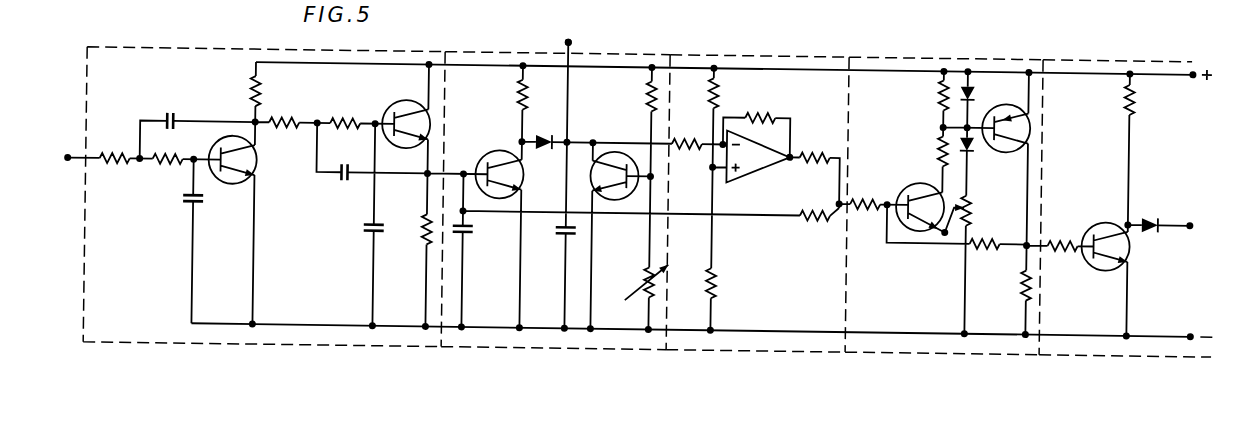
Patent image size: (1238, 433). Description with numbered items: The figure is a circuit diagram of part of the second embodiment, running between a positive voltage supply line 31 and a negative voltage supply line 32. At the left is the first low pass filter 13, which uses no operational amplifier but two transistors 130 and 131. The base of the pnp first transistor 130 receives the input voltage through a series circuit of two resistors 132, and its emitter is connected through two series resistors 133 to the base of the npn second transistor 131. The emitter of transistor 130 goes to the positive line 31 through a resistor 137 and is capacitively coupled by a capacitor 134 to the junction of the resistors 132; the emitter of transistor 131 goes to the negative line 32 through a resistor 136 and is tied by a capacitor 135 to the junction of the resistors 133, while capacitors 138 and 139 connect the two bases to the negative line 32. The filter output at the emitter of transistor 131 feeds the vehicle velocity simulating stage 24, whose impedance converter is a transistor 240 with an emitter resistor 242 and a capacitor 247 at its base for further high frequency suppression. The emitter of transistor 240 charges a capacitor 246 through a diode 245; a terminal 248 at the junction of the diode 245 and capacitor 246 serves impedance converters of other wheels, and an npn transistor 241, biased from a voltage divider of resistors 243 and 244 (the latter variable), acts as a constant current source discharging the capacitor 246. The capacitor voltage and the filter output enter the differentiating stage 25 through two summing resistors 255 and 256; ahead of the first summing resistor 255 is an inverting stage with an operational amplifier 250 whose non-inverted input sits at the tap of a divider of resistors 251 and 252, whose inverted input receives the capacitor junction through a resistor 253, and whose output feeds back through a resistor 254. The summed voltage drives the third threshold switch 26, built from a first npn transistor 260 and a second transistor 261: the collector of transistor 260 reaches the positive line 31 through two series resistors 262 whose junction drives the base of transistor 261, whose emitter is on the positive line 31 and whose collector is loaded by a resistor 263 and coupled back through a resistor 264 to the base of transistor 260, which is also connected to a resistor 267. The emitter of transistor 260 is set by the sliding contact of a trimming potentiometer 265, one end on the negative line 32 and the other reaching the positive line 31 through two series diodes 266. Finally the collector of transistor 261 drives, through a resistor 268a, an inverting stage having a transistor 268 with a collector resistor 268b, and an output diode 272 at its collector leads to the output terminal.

The first low pass filter 13 is at (302, 342).
The vehicle velocity simulating stage 24 is at (550, 342).
The differentiating stage 25 is at (786, 342).
The third threshold switch 26 is at (966, 340).
The positive voltage supply line 31 is at (1162, 60).
The negative voltage supply line 32 is at (1172, 340).
The first transistor 130 is at (258, 170).
The second transistor 131 is at (430, 100).
The resistors 132 is at (168, 172).
The resistors 133 is at (364, 114).
The capacitor 134 is at (168, 108).
The capacitor 135 is at (340, 180).
The resistor 136 is at (424, 232).
The resistor 137 is at (250, 90).
The capacitor 138 is at (200, 207).
The capacitor 139 is at (368, 232).
The transistor 240 is at (503, 148).
The npn transistor 241 is at (628, 198).
The emitter resistor 242 is at (518, 94).
The resistor 243 is at (648, 96).
The resistor 244 is at (648, 286).
The diode 245 is at (556, 134).
The capacitor 246 is at (566, 234).
The capacitor 247 is at (470, 233).
The terminal 248 is at (572, 40).
The operational amplifier 250 is at (760, 166).
The resistor 251 is at (722, 280).
The resistor 252 is at (720, 72).
The resistor 253 is at (688, 134).
The resistor 254 is at (770, 106).
The first summing resistor 255 is at (826, 146).
The summing resistor 256 is at (816, 220).
The first transistor 260 is at (914, 226).
The second transistor 261 is at (1034, 116).
The resistors 262 is at (938, 130).
The resistor 263 is at (1022, 284).
The resistor 264 is at (988, 240).
The trimming potentiometer 265 is at (976, 198).
The diodes 266 is at (972, 78).
The resistor 267 is at (868, 192).
The transistor 268 is at (1134, 242).
The resistor 268a is at (1064, 246).
The collector resistor 268b is at (1140, 100).
The output diode 272 is at (1160, 206).